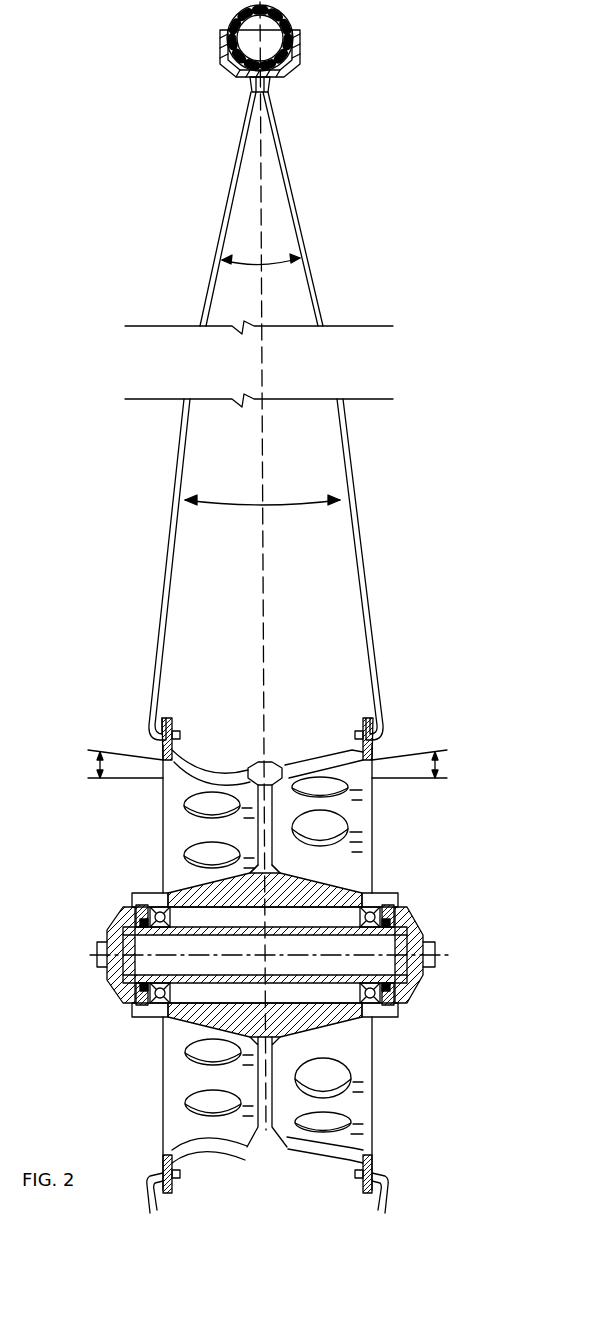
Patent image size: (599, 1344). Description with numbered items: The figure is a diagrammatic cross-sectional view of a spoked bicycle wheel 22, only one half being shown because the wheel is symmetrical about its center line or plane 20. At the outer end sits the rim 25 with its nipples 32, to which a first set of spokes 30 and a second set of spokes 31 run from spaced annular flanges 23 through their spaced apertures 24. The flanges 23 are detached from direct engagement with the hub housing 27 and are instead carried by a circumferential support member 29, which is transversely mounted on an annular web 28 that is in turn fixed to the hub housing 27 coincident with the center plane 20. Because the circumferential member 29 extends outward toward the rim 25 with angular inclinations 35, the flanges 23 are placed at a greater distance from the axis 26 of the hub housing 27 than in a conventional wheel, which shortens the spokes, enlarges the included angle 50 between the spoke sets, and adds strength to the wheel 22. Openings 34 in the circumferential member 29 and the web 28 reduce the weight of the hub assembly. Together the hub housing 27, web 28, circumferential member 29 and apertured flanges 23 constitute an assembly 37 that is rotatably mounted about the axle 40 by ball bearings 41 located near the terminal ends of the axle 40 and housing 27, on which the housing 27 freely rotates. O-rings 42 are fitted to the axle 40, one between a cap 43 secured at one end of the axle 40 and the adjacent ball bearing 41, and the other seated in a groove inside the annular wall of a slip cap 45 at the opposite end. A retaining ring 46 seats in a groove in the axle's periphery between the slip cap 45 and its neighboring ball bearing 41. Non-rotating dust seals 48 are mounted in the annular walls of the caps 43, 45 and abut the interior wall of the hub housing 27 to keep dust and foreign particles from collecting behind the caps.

The center line 20 is at (263, 578).
The wheel 22 is at (205, 263).
The annular flanges 23 is at (170, 730).
The apertures 24 is at (182, 735).
The rim 25 is at (297, 56).
The axis 26 is at (86, 960).
The hub housing 27 is at (366, 893).
The annular web 28 is at (272, 845).
The circumferential support member 29 is at (262, 775).
The first set of spokes 30 is at (236, 196).
The second set of spokes 31 is at (290, 196).
The nipples 32 is at (250, 85).
The openings 34 is at (214, 776).
The angular inclinations 35 is at (97, 763).
The assembly 37 is at (90, 826).
The axle 40 is at (213, 964).
The ball bearings 41 is at (156, 905).
The O-rings 42 is at (118, 928).
The cap 43 is at (428, 938).
The slip cap 45 is at (105, 934).
The retaining ring 46 is at (150, 927).
The dust seals 48 is at (138, 908).
The included angle 50 is at (262, 264).